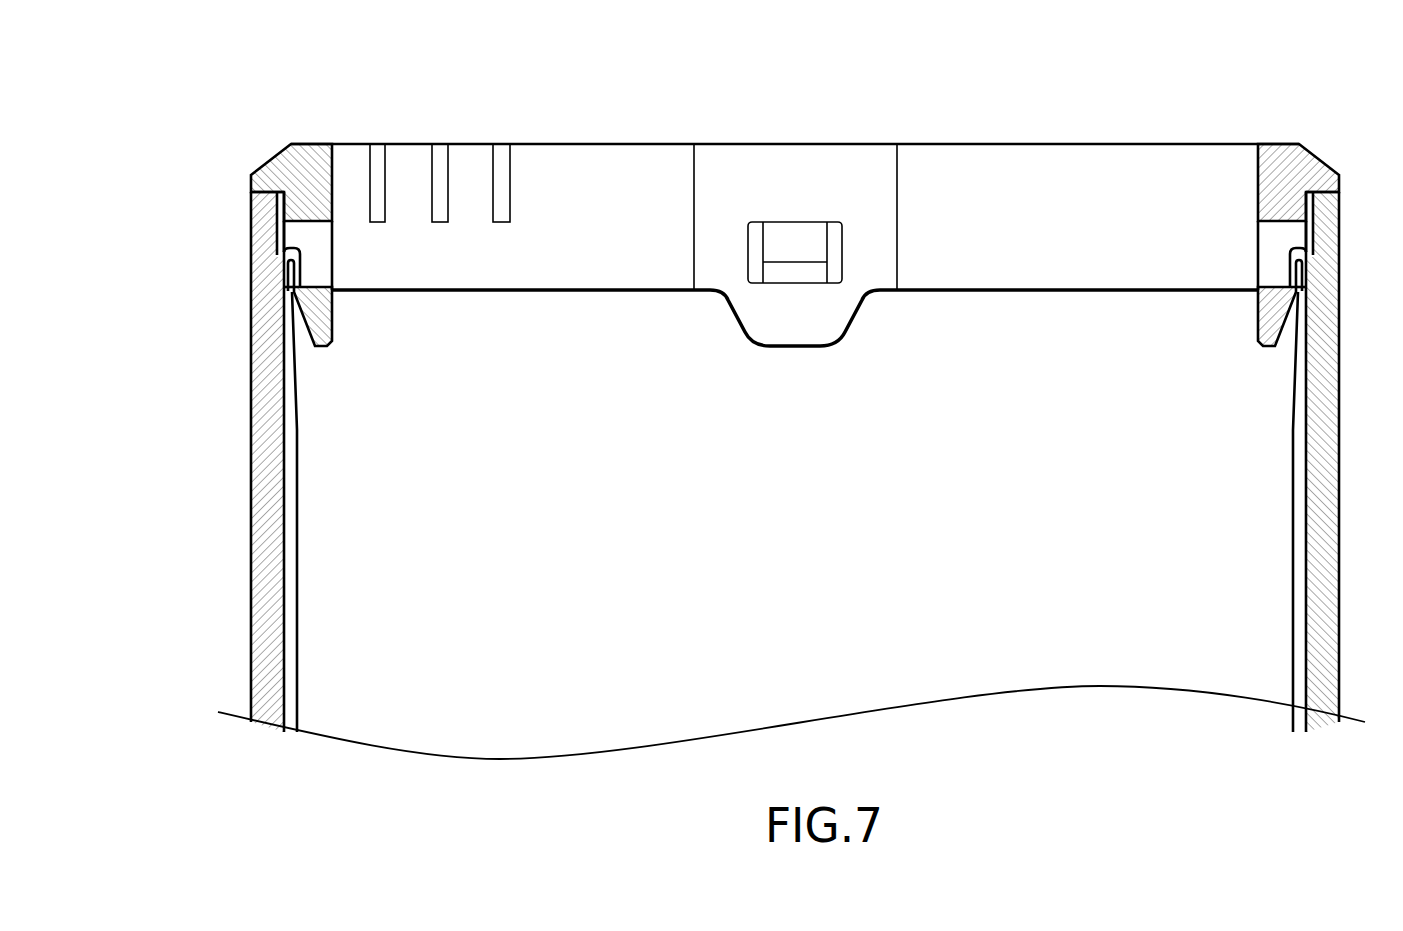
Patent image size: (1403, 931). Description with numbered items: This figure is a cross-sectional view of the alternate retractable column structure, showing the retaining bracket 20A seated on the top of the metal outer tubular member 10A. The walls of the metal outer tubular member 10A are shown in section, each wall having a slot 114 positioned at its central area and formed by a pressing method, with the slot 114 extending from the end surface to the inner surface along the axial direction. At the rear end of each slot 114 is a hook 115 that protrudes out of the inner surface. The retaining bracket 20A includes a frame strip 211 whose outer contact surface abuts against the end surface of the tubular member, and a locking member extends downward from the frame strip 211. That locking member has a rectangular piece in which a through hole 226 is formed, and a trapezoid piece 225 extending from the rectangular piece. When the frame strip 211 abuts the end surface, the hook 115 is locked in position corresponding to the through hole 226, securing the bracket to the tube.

The metal outer tubular member 10A is at (235, 540).
The retaining bracket 20A is at (1117, 140).
The frame strip 211 is at (312, 158).
The slot 114 is at (282, 212).
The through hole 226 is at (298, 233).
The hook 115 is at (295, 247).
The trapezoid piece 225 is at (312, 310).